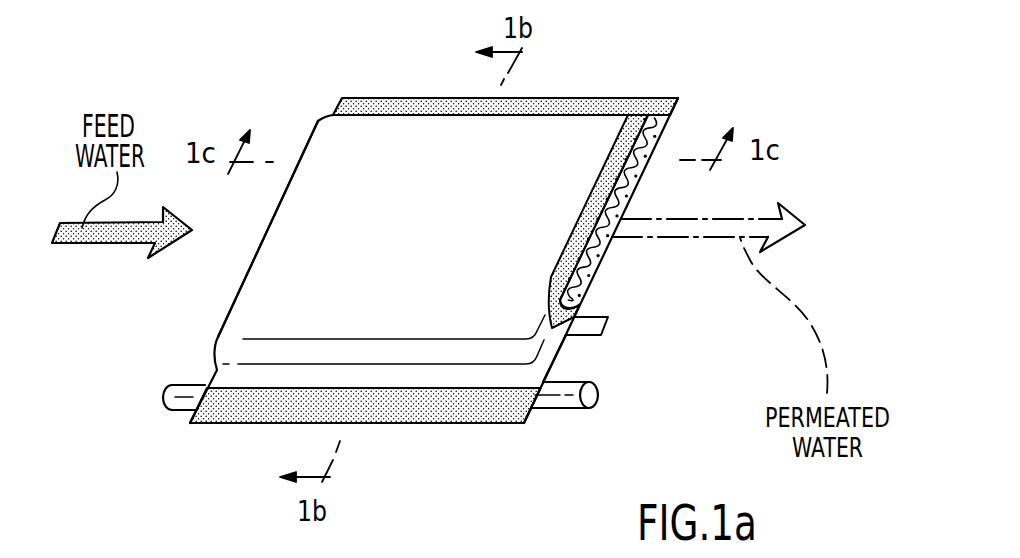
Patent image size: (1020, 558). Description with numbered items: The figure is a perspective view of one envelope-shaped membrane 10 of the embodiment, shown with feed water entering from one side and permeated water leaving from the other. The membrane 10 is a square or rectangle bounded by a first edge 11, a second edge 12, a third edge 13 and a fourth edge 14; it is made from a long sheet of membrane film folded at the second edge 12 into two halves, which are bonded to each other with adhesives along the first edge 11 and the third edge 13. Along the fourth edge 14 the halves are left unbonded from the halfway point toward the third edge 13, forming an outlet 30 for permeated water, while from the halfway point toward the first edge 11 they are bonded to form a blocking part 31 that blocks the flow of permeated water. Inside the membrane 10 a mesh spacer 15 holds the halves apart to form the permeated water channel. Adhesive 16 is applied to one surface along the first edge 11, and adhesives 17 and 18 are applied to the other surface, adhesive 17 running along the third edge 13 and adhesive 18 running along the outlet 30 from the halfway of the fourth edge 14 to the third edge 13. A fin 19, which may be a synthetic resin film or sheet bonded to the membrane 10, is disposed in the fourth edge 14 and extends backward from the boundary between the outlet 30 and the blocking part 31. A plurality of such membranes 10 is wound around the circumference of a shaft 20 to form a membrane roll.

The envelope-shaped membrane 10 is at (608, 128).
The first edge 11 is at (474, 430).
The second edge 12 is at (230, 285).
The third edge 13 is at (652, 92).
The fourth edge 14 is at (652, 183).
The spacer 15 is at (672, 137).
The adhesive 16 is at (243, 424).
The adhesive 17 is at (367, 110).
The adhesive 18 is at (606, 194).
The fin 19 is at (590, 331).
The shaft 20 is at (557, 410).
The outlet for permeated water 30 is at (621, 244).
The blocking part 31 is at (552, 382).